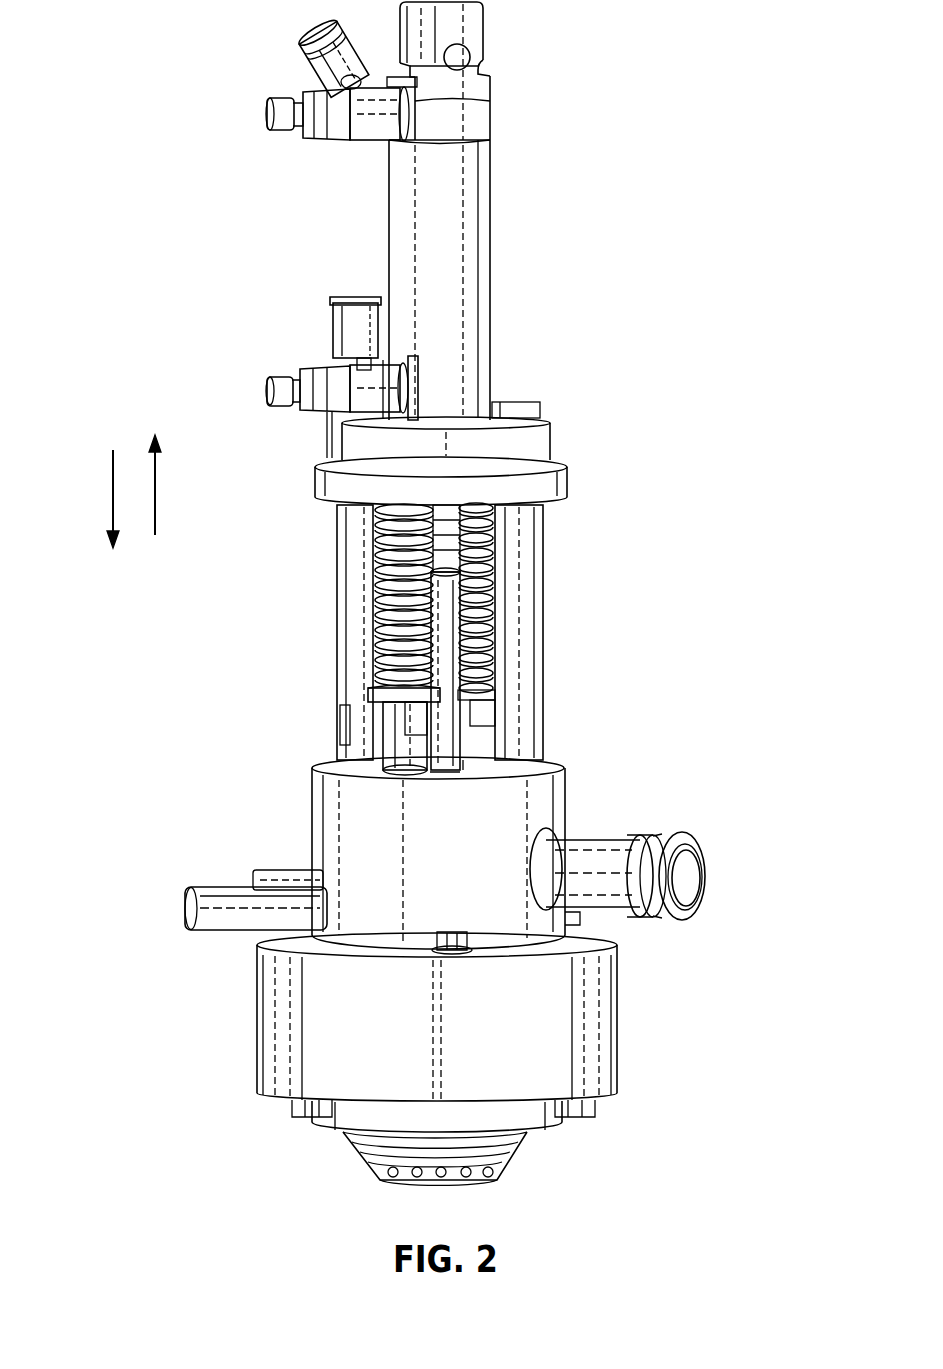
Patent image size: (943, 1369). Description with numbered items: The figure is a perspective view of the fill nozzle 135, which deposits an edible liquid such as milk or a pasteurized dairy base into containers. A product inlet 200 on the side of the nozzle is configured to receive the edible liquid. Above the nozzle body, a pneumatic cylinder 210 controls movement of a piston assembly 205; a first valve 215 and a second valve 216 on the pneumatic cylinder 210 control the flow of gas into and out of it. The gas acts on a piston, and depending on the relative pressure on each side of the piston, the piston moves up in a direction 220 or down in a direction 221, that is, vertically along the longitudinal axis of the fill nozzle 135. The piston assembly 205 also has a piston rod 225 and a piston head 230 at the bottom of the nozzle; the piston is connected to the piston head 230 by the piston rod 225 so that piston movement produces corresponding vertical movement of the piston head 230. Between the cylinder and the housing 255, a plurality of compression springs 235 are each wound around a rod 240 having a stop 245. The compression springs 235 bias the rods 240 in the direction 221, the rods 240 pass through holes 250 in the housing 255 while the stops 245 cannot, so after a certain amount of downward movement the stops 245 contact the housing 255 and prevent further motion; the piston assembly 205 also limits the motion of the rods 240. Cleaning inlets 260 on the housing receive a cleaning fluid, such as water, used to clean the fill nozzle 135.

The fill nozzle 135 is at (651, 390).
The product inlet 200 is at (600, 848).
The piston assembly 205 is at (462, 656).
The pneumatic cylinder 210 is at (510, 216).
The first valve 215 is at (372, 122).
The second valve 216 is at (343, 332).
The direction 220 is at (157, 482).
The direction 221 is at (111, 482).
The piston rod 225 is at (478, 727).
The piston head 230 is at (488, 1186).
The compression springs 235 is at (492, 558).
The rod 240 is at (500, 581).
The stop 245 is at (498, 684).
The holes 250 is at (480, 758).
The housing 255 is at (327, 824).
The cleaning inlets 260 is at (285, 876).